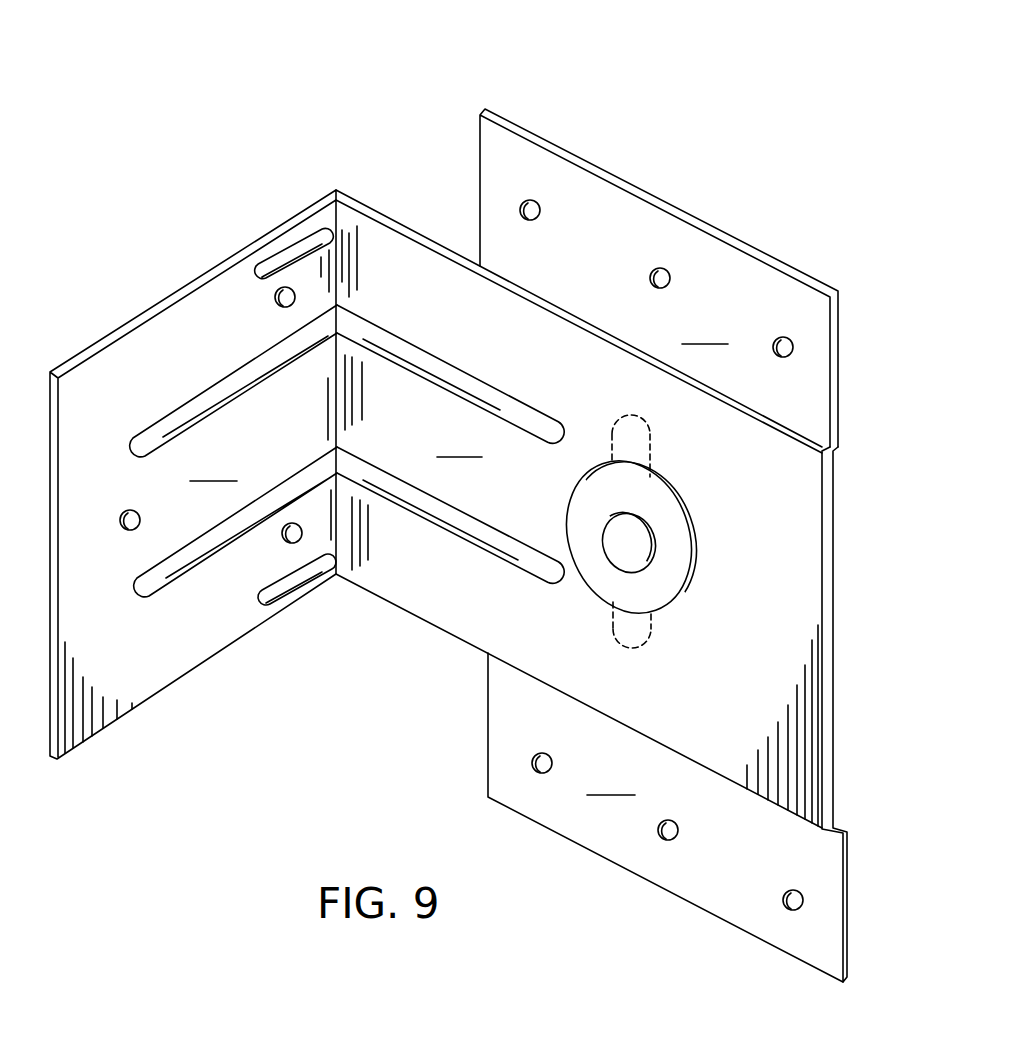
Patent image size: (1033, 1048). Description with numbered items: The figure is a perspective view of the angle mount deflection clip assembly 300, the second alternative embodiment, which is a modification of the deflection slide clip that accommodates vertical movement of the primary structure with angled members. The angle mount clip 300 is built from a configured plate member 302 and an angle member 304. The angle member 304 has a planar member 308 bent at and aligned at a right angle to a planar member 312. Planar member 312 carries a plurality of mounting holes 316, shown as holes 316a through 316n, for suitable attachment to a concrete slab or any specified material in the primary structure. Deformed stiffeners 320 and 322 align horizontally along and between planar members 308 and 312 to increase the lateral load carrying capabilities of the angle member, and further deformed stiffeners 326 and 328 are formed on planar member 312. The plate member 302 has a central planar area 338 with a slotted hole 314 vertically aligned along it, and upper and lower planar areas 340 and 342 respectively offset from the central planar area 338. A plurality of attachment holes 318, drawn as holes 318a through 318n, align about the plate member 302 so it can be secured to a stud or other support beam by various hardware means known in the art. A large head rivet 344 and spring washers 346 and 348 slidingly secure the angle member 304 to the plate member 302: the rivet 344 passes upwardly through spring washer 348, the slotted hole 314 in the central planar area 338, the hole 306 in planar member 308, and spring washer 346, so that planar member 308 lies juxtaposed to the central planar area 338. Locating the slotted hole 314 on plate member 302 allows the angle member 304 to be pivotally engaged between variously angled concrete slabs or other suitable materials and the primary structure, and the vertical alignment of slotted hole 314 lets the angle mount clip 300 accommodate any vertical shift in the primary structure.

The angle mount deflection clip assembly 300 is at (436, 426).
The plate member 302 is at (700, 495).
The angle member 304 is at (436, 496).
The hole 306 is at (625, 551).
The planar member 308 is at (579, 509).
The planar member 312 is at (193, 474).
The slotted hole 314 is at (650, 440).
The mounting holes 316 is at (130, 520).
The mounting hole 316a is at (276, 298).
The mounting hole 316n is at (301, 531).
The attachment holes 318 is at (662, 554).
The attachment hole 318a is at (538, 199).
The attachment hole 318n is at (803, 896).
The deformed stiffener 320 is at (181, 418).
The deformed stiffener 322 is at (194, 562).
The deformed stiffener 326 is at (312, 237).
The deformed stiffener 328 is at (283, 596).
The central planar area 338 is at (833, 492).
The upper planar area 340 is at (659, 278).
The lower planar area 342 is at (665, 803).
The large head rivet 344 is at (617, 553).
The spring washer 346 is at (652, 597).
The spring washer 348 is at (650, 477).